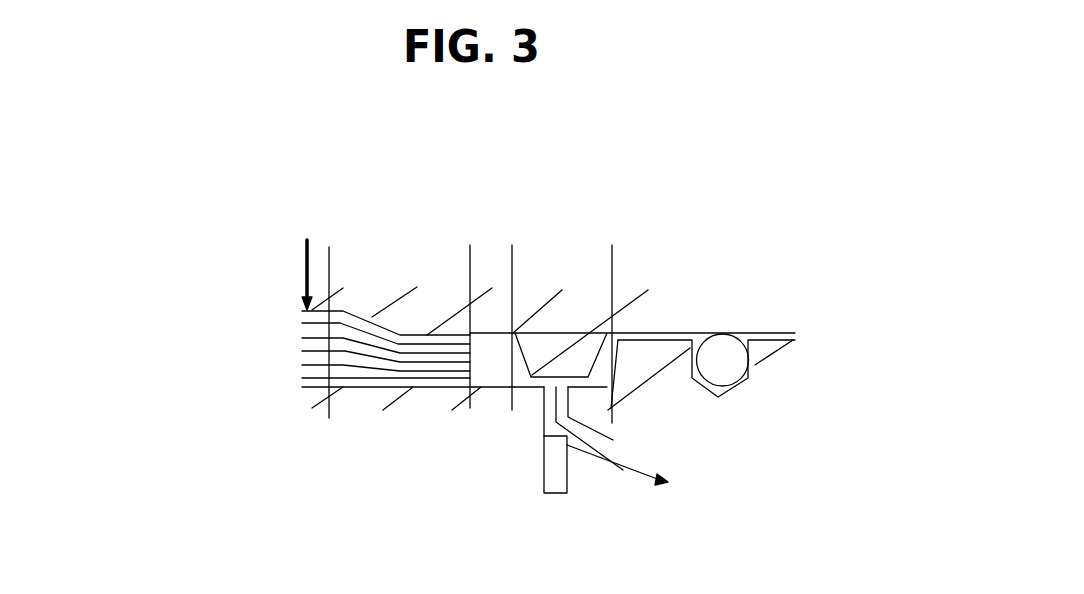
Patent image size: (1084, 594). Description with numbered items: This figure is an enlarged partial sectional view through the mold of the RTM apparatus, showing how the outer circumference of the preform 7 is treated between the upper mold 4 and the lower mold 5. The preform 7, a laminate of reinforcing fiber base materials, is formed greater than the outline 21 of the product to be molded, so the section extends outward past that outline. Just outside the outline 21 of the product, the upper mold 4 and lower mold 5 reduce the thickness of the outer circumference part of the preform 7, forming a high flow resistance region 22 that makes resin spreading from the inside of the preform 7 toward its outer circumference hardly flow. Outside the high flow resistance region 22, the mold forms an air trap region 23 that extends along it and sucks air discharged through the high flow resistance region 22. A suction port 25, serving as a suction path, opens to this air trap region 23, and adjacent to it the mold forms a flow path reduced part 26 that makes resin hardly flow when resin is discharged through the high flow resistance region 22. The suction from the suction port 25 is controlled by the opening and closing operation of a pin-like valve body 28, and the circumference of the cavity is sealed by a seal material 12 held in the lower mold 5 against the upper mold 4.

The upper mold 4 is at (673, 333).
The lower mold 5 is at (548, 381).
The preform 7 is at (367, 357).
The seal material 12 is at (722, 362).
The outline of product 21 is at (306, 282).
The high flow resistance region 22 is at (465, 247).
The air trap region 23 is at (510, 247).
The suction port 25 is at (546, 397).
The flow path reduced part 26 is at (610, 247).
The pin-like valve body 28 is at (560, 472).